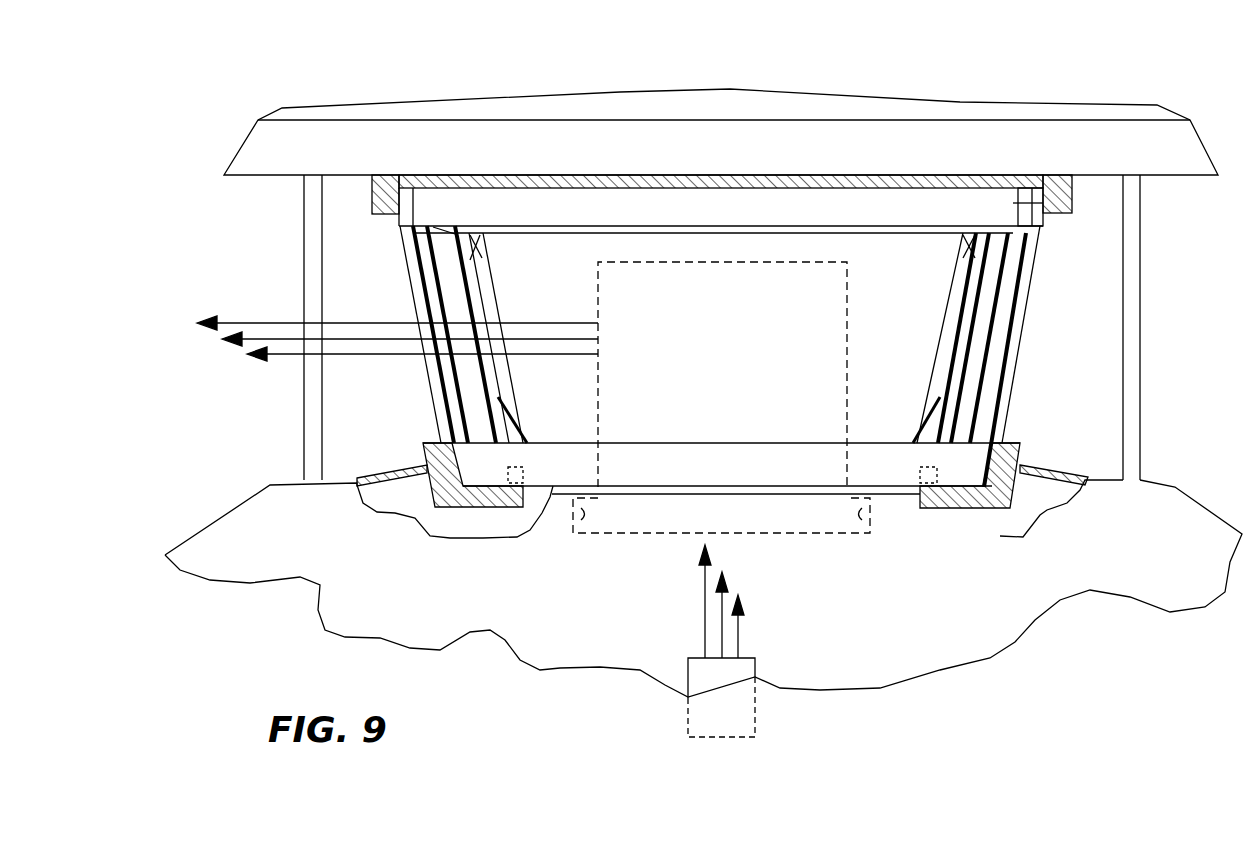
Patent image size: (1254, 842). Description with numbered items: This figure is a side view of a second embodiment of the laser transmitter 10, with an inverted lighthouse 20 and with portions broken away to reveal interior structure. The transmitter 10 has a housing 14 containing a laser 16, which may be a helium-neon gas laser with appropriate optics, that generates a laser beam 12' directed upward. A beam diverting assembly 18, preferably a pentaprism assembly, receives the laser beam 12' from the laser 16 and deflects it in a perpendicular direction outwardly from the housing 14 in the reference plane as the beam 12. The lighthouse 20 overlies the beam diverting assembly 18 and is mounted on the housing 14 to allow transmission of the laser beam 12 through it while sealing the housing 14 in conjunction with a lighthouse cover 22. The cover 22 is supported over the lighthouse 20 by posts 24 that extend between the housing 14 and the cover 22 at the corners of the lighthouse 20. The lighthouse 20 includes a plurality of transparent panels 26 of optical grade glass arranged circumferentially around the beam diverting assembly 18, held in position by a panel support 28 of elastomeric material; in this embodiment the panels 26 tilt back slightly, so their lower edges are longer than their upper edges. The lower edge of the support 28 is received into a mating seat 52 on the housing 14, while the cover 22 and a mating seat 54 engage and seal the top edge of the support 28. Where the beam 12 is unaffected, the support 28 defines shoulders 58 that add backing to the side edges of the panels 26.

The laser transmitter 10 is at (922, 48).
The laser beam 12 is at (393, 349).
The laser beam 12' is at (761, 630).
The housing 14 is at (1183, 512).
The laser 16 is at (688, 705).
The beam diverting assembly 18 is at (688, 262).
The lighthouse 20 is at (1020, 378).
The lighthouse cover 22 is at (1030, 113).
The posts 24 is at (305, 425).
The transparent panels 26 is at (428, 362).
The panel support 28 is at (1075, 218).
The mating seat 52 is at (490, 507).
The mating seat 54 is at (370, 195).
The shoulders 58 is at (485, 243).